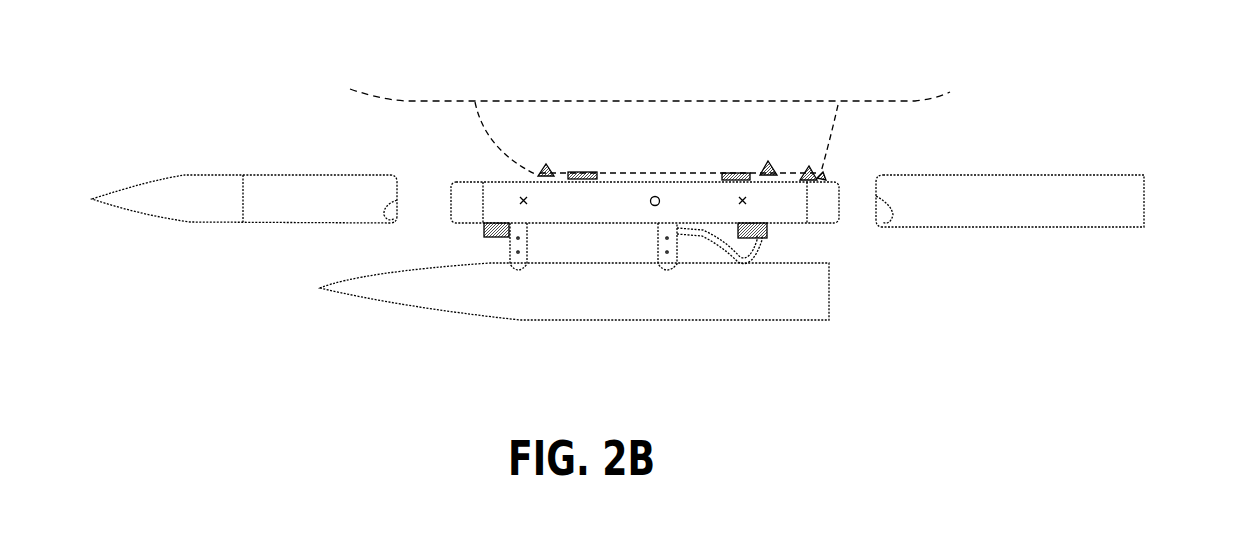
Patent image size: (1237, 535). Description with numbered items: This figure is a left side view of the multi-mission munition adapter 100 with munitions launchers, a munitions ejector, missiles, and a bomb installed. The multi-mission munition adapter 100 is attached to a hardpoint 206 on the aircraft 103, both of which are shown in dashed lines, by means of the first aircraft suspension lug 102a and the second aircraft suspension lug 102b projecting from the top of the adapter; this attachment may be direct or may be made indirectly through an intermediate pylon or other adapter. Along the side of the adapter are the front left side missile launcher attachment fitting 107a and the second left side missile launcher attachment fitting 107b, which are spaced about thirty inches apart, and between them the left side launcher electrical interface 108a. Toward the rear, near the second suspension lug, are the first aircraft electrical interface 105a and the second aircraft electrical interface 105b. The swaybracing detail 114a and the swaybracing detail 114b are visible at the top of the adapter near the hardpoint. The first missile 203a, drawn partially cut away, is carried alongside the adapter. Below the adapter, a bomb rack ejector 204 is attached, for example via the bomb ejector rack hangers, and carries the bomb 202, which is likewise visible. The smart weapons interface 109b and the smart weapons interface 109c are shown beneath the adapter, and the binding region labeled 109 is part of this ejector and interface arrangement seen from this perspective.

The multi-mission munition adapter 100 is at (473, 178).
The first aircraft suspension lug 102a is at (546, 165).
The second aircraft suspension lug 102b is at (764, 160).
The aircraft 103 is at (402, 99).
The first aircraft electrical interface 105a is at (797, 180).
The second aircraft electrical interface 105b is at (818, 178).
The first left side missile launcher attachment fitting 107a is at (528, 199).
The second left side missile launcher attachment fitting 107b is at (747, 199).
The left side launcher electrical interface 108a is at (655, 196).
The binding assembly 109 is at (795, 226).
The smart weapons interface 109b is at (492, 240).
The smart weapons interface 109c is at (770, 240).
The swaybracing detail 114a is at (592, 172).
The swaybracing detail 114b is at (732, 172).
The bomb 202 is at (322, 289).
The first missile 203a is at (183, 222).
The bomb rack ejector 204 is at (497, 238).
The hardpoint 206 is at (700, 170).